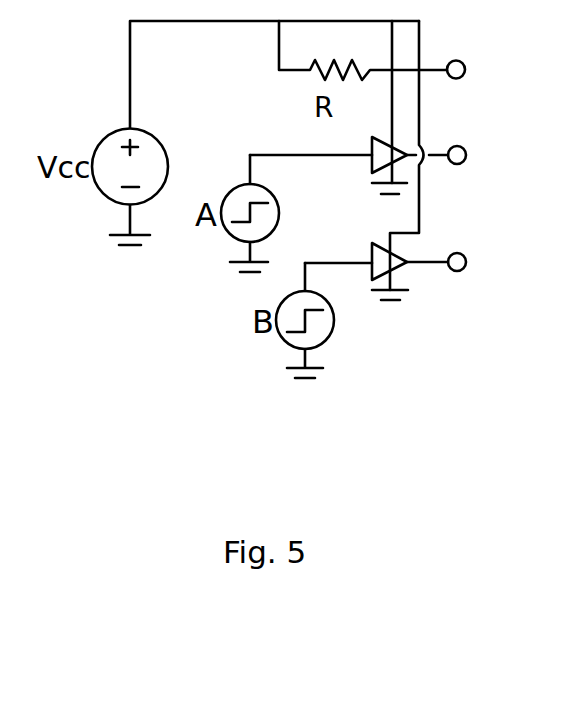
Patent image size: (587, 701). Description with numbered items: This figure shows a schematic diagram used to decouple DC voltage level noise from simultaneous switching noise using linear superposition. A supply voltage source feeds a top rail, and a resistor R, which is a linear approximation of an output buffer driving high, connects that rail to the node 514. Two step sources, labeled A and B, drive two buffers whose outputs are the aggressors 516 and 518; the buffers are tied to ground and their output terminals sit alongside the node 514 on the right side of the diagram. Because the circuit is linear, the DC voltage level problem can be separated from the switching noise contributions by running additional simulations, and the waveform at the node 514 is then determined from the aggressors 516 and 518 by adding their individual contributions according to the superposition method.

The node 514 is at (485, 70).
The aggressor 516 is at (463, 155).
The aggressor 518 is at (463, 262).